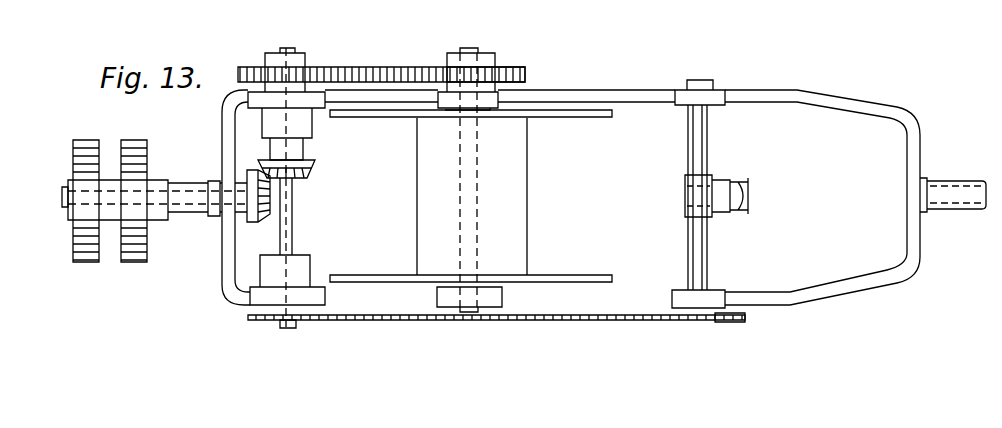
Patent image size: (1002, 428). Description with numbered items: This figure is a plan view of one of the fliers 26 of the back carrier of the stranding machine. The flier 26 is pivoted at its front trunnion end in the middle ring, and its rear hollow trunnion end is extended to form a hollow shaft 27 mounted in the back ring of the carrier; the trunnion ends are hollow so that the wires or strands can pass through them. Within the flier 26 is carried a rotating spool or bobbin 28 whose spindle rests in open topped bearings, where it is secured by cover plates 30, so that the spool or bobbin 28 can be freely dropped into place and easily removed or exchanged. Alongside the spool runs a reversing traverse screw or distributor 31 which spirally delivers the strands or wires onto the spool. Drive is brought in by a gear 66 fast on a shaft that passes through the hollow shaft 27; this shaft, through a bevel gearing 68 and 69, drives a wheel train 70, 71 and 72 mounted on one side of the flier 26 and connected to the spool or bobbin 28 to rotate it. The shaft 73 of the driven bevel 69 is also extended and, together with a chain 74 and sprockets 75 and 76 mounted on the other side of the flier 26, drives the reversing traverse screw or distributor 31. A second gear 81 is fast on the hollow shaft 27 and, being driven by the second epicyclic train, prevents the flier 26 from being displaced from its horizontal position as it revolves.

The flier 26 is at (647, 94).
The hollow shaft 27 is at (180, 180).
The spool or bobbin 28 is at (517, 222).
The cover plates 30 is at (447, 100).
The reversing traverse screw or distributor 31 is at (695, 142).
The gear 66 is at (89, 140).
The bevel gear 68 is at (254, 218).
The driven bevel 69 is at (302, 163).
The wheel train gear 70 is at (303, 70).
The wheel train gear 71 is at (372, 70).
The wheel train gear 72 is at (525, 74).
The shaft 73 is at (292, 226).
The chain 74 is at (432, 316).
The sprocket 75 is at (292, 322).
The sprocket 76 is at (745, 317).
The gear 81 is at (140, 248).